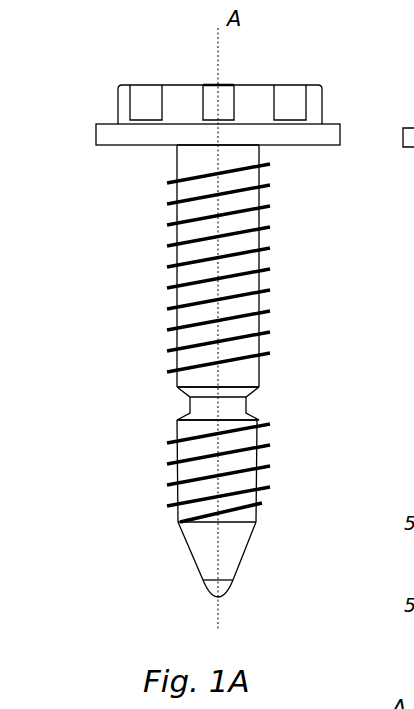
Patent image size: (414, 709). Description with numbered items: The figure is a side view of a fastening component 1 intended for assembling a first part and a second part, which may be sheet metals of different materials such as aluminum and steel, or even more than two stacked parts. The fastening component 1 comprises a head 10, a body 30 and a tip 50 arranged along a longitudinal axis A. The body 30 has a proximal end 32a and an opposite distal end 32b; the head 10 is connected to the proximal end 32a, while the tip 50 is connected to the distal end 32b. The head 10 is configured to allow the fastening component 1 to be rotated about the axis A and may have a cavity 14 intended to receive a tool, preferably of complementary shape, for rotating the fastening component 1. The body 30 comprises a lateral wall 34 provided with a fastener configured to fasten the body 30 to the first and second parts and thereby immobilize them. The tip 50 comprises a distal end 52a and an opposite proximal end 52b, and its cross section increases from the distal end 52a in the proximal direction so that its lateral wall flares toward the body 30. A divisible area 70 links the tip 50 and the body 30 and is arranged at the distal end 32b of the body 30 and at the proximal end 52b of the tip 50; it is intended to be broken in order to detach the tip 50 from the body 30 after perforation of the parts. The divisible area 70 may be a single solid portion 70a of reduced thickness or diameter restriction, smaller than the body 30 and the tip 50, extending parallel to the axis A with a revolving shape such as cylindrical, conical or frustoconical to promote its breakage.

The fastening component 1 is at (58, 104).
The head 10 is at (117, 97).
The cavity 14 is at (288, 105).
The body 30 is at (176, 236).
The proximal end 32a is at (247, 153).
The distal end 32b is at (246, 388).
The lateral wall 34 is at (252, 262).
The tip 50 is at (178, 472).
The distal end 52a is at (226, 591).
The proximal end 52b is at (257, 411).
The divisible area 70 is at (200, 405).
The portion of reduced thickness 70a is at (218, 403).